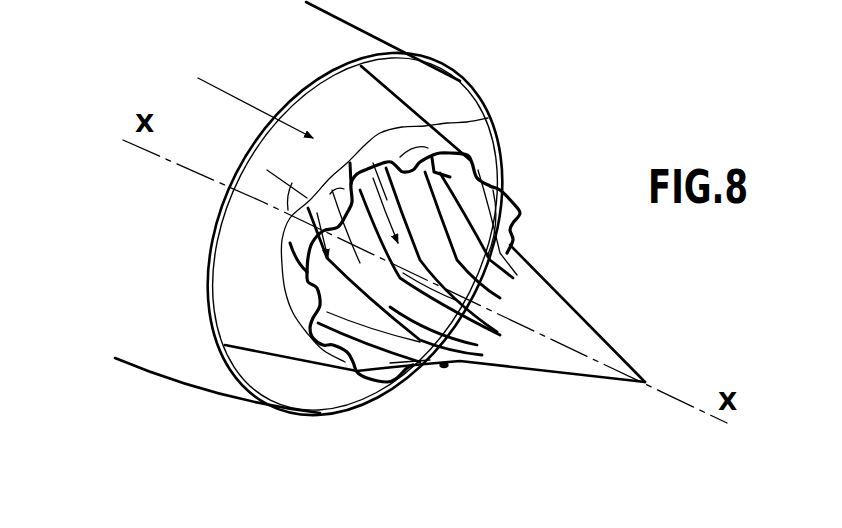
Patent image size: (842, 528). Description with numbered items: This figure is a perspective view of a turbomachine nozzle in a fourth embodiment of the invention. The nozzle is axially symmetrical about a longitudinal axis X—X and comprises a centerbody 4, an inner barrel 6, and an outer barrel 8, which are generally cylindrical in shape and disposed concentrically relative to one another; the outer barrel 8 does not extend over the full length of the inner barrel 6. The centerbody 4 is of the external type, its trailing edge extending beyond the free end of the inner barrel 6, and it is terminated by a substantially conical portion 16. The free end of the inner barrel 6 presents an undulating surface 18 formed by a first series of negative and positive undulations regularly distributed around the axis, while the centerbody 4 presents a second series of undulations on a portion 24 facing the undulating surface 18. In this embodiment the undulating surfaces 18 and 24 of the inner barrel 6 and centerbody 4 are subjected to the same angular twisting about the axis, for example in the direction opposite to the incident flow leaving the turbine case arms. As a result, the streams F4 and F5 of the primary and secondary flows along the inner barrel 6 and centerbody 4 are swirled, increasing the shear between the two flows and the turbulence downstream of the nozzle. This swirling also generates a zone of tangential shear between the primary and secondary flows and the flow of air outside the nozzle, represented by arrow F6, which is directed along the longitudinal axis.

The centerbody 4 is at (466, 368).
The inner barrel 6 is at (432, 113).
The outer barrel 8 is at (203, 383).
The conical portion 16 is at (580, 330).
The undulating surface 18 is at (450, 150).
The undulating portion of the centerbody 24 is at (475, 212).
The stream of the primary flow F4 is at (408, 138).
The stream of the secondary flow F5 is at (287, 211).
The flow of air outside the nozzle F6 is at (234, 97).